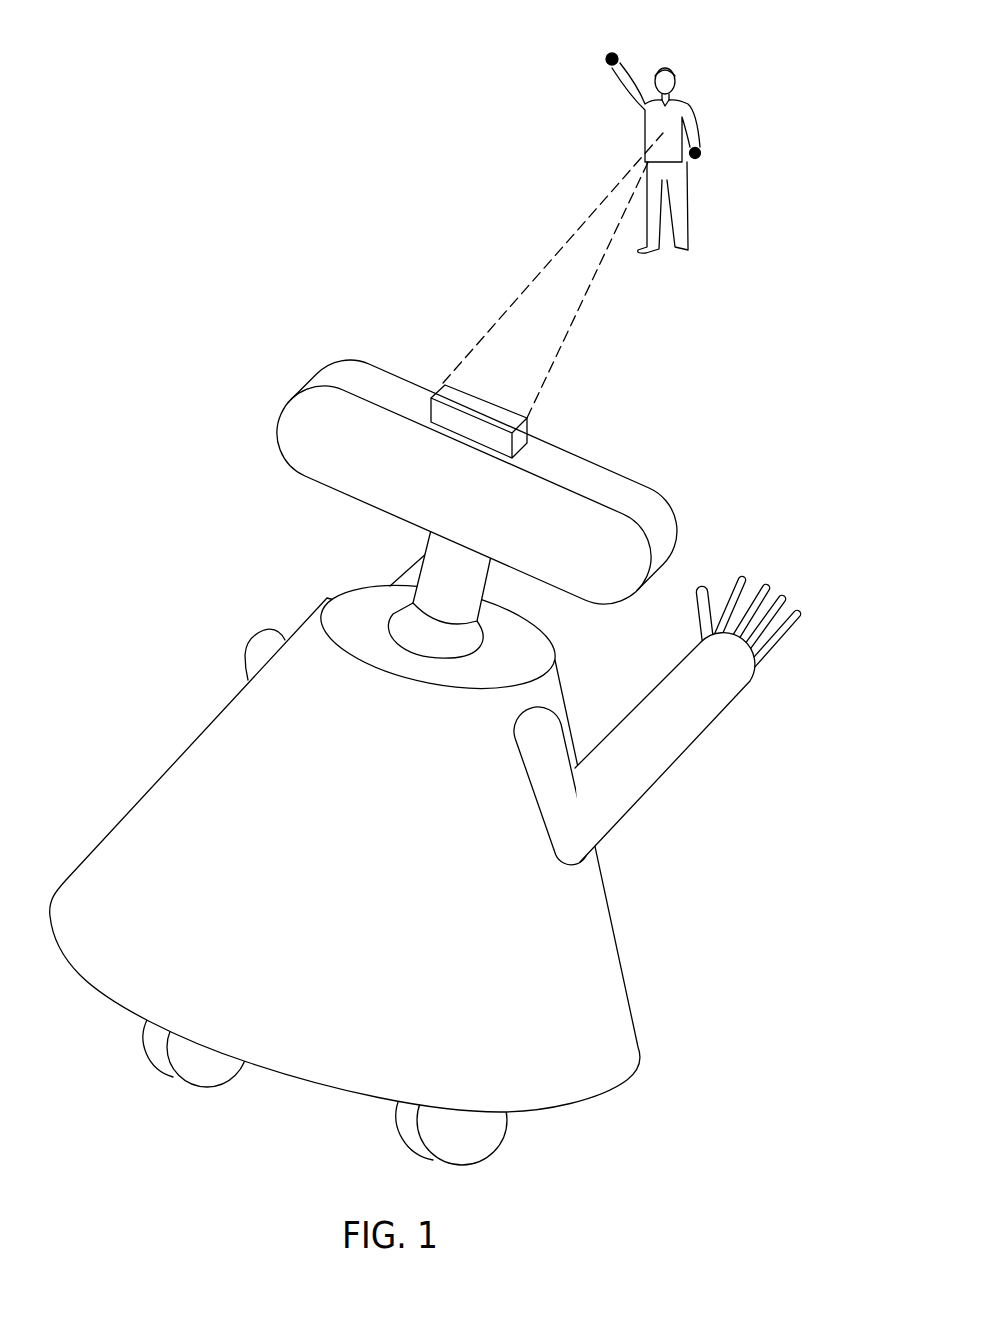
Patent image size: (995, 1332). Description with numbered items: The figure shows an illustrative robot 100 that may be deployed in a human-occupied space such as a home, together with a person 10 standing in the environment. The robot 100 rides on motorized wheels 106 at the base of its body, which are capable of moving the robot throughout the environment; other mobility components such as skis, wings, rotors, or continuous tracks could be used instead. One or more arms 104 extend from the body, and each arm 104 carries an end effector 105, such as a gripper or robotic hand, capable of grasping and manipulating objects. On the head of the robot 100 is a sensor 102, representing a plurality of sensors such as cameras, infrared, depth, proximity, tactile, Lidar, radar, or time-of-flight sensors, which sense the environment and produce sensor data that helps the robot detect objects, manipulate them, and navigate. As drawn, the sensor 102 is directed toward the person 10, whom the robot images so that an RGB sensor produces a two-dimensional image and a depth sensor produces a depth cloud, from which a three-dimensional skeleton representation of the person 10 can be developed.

The person 10 is at (698, 95).
The robot 100 is at (288, 350).
The sensors 102 is at (443, 384).
The arms 104 is at (406, 573).
The end effector 105 is at (779, 648).
The motorized wheels 106 is at (163, 1072).